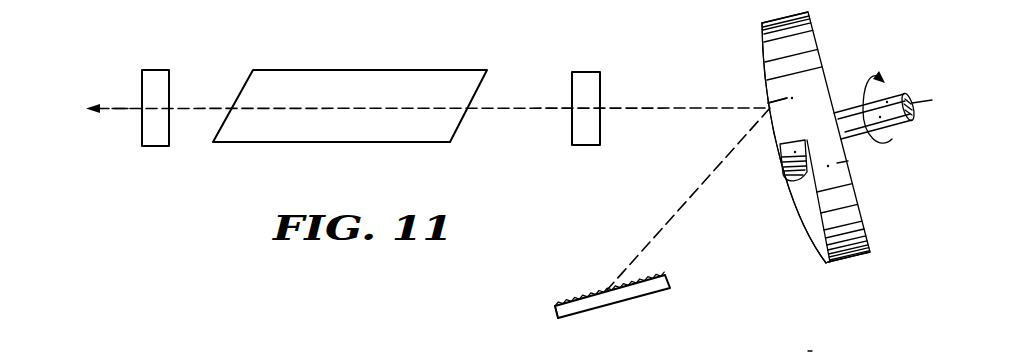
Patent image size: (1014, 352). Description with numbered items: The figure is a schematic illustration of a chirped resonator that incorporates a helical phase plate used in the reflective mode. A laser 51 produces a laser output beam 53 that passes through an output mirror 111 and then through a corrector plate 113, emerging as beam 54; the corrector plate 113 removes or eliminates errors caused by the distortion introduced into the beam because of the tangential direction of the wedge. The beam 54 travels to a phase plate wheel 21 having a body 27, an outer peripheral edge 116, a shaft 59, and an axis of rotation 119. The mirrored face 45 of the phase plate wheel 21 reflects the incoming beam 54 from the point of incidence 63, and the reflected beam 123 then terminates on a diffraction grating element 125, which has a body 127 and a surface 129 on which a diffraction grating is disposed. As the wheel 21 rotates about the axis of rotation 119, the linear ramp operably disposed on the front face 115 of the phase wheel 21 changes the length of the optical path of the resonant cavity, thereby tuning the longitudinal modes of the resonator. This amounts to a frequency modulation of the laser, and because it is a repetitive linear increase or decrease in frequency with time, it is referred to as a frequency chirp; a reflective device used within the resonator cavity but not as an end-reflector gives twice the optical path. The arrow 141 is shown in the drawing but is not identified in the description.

The phase plate wheel 21 is at (826, 24).
The body 27 is at (769, 21).
The mirrored face 45 is at (753, 74).
The laser 51 is at (326, 57).
The laser output beam 53 is at (120, 108).
The corrected beam 54 is at (665, 108).
The shaft 59 is at (848, 105).
The point of incidence 63 is at (758, 113).
The output mirror 111 is at (171, 72).
The corrector plate 113 is at (584, 72).
The front face 115 is at (808, 198).
The outer peripheral edge 116 is at (837, 263).
The axis of rotation 119 is at (914, 102).
The reflected beam 123 is at (660, 228).
The diffraction grating element 125 is at (565, 332).
The body 127 is at (656, 297).
The surface 129 is at (594, 296).
The direction arrow 141 is at (815, 343).